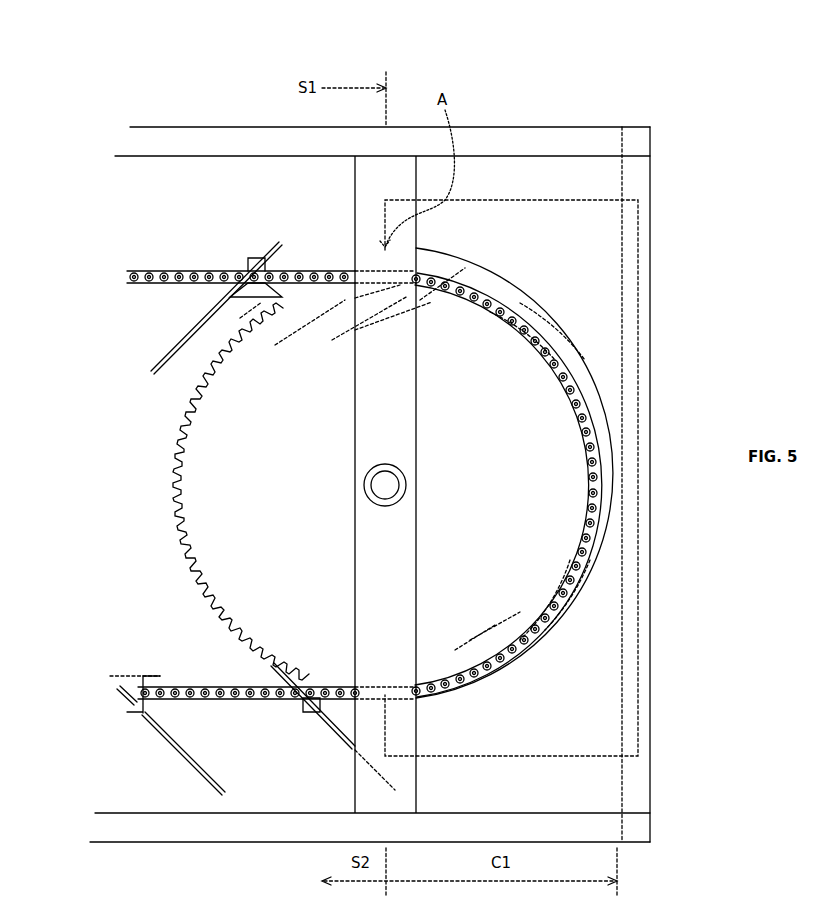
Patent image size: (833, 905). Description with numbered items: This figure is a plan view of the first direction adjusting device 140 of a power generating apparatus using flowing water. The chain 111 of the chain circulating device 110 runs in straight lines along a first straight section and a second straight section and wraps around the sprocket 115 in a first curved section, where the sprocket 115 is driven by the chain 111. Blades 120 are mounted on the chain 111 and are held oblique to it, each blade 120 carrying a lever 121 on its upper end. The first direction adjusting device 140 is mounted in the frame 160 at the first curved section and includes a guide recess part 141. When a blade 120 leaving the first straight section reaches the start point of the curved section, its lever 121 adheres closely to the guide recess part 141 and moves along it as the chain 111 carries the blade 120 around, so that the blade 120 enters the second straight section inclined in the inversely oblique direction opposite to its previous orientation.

The chain circulating device 110 is at (322, 262).
The chain 111 is at (200, 270).
The sprocket 115 is at (175, 468).
The blade 120 is at (173, 345).
The lever 121 is at (256, 256).
The first direction adjusting device 140 is at (548, 200).
The guide recess part 141 is at (554, 322).
The frame 160 is at (662, 470).